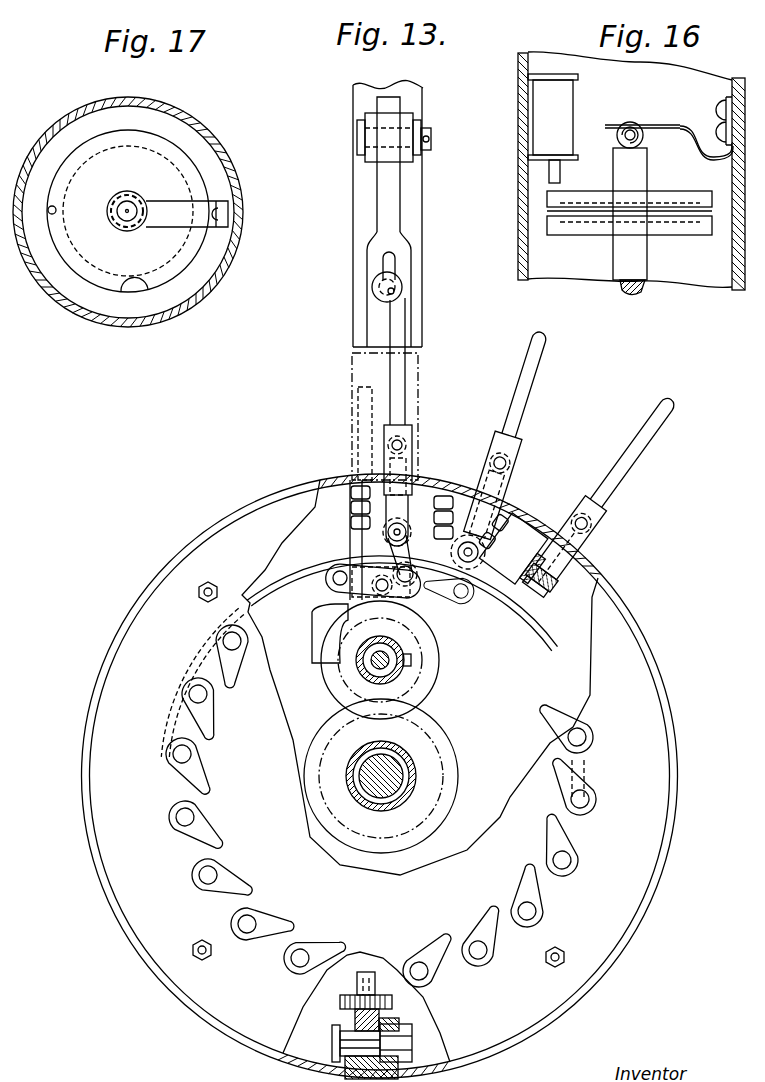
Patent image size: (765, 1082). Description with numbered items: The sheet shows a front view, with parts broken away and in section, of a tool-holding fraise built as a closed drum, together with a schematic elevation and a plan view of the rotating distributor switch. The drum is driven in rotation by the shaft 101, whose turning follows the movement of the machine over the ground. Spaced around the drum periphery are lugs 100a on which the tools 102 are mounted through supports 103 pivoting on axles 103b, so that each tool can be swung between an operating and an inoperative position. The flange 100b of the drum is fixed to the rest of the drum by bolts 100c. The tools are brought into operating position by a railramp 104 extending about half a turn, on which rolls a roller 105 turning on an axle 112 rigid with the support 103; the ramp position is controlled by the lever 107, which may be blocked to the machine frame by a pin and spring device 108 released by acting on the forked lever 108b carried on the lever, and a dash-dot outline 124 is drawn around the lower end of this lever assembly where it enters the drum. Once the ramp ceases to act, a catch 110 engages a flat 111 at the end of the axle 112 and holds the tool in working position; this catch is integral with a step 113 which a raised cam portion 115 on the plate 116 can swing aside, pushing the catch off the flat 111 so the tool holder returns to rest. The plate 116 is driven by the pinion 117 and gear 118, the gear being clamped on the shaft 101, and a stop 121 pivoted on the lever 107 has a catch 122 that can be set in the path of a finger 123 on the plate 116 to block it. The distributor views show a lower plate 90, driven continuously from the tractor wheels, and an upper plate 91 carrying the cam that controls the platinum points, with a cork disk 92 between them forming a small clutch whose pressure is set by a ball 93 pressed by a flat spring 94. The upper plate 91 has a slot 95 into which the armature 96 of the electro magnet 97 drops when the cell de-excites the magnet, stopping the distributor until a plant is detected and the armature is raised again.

In FIG. 16, the lower plate 90 is at (698, 229).
In FIG. 17, the upper plate 91 is at (182, 150).
In FIG. 16, the upper plate 91 is at (712, 198).
In FIG. 17, the cork disk 92 is at (80, 160).
In FIG. 16, the cork disk 92 is at (700, 212).
In FIG. 17, the ball 93 is at (121, 230).
In FIG. 16, the ball 93 is at (641, 129).
In FIG. 17, the flat spring 94 is at (168, 218).
In FIG. 16, the flat spring 94 is at (703, 151).
In FIG. 17, the slot 95 is at (140, 292).
In FIG. 16, the armature 96 is at (560, 168).
In FIG. 16, the electro magnet 97 is at (565, 100).
In FIG. 13, the lug 100a is at (557, 530).
In FIG. 13, the flange 100b is at (148, 623).
In FIG. 13, the bolt 100c is at (211, 583).
In FIG. 13, the shaft 101 is at (400, 770).
In FIG. 13, the tool 102 is at (406, 358).
In FIG. 13, the support 103 is at (582, 560).
In FIG. 13, the axle 103b is at (598, 578).
In FIG. 13, the railramp 104 is at (300, 580).
In FIG. 13, the roller 105 is at (346, 1005).
In FIG. 13, the lever 107 is at (408, 302).
In FIG. 13, the pin and spring device 108 is at (396, 284).
In FIG. 13, the forked lever 108b is at (400, 198).
In FIG. 13, the catch 110 is at (454, 551).
In FIG. 13, the flat 111 is at (440, 512).
In FIG. 13, the axle 112 is at (372, 974).
In FIG. 13, the step 113 is at (470, 598).
In FIG. 13, the raised cam portion 115 is at (318, 650).
In FIG. 13, the plate 116 is at (335, 677).
In FIG. 13, the pinion 117 is at (430, 685).
In FIG. 13, the gear 118 is at (445, 795).
In FIG. 13, the stop 121 is at (352, 562).
In FIG. 13, the catch 122 is at (415, 605).
In FIG. 13, the finger 123 is at (425, 630).
In FIG. 13, the guide 124 is at (352, 424).